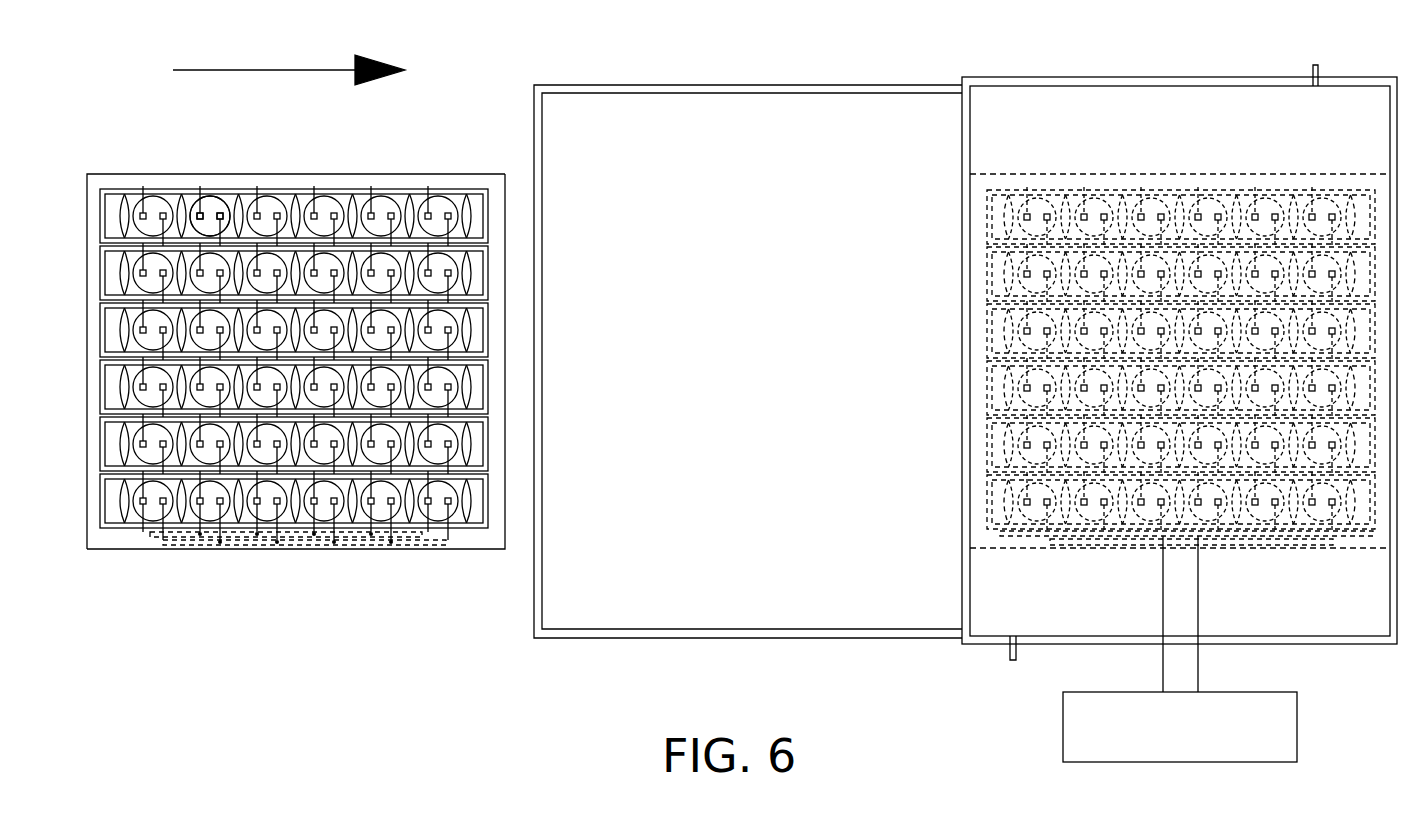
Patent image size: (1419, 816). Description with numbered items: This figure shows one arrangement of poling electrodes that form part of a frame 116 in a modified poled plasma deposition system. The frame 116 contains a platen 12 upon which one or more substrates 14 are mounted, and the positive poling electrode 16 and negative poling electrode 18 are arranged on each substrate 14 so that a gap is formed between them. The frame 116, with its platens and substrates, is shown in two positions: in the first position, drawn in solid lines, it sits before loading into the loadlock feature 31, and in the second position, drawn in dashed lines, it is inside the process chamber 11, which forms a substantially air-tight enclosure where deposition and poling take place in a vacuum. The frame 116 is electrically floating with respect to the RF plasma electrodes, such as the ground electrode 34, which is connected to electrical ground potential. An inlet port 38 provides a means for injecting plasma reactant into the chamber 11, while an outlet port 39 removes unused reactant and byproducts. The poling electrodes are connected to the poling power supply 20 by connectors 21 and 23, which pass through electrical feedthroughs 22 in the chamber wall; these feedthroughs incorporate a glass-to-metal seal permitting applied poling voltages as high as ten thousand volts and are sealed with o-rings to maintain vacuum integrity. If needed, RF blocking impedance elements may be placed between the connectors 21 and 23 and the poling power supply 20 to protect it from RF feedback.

The chamber 11 is at (1190, 78).
The platen 12 is at (490, 205).
The substrate 14 is at (210, 209).
The positive poling electrode 16 is at (221, 211).
The negative poling electrode 18 is at (197, 210).
The poling power supply 20 is at (1290, 712).
The connector 21 is at (260, 545).
The electrical feedthrough 22 is at (1163, 650).
The connector 23 is at (240, 537).
The loadlock feature 31 is at (770, 341).
The ground electrode 34 is at (128, 183).
The inlet port 38 is at (1316, 65).
The outlet port 39 is at (1013, 662).
The frame 116 is at (493, 548).